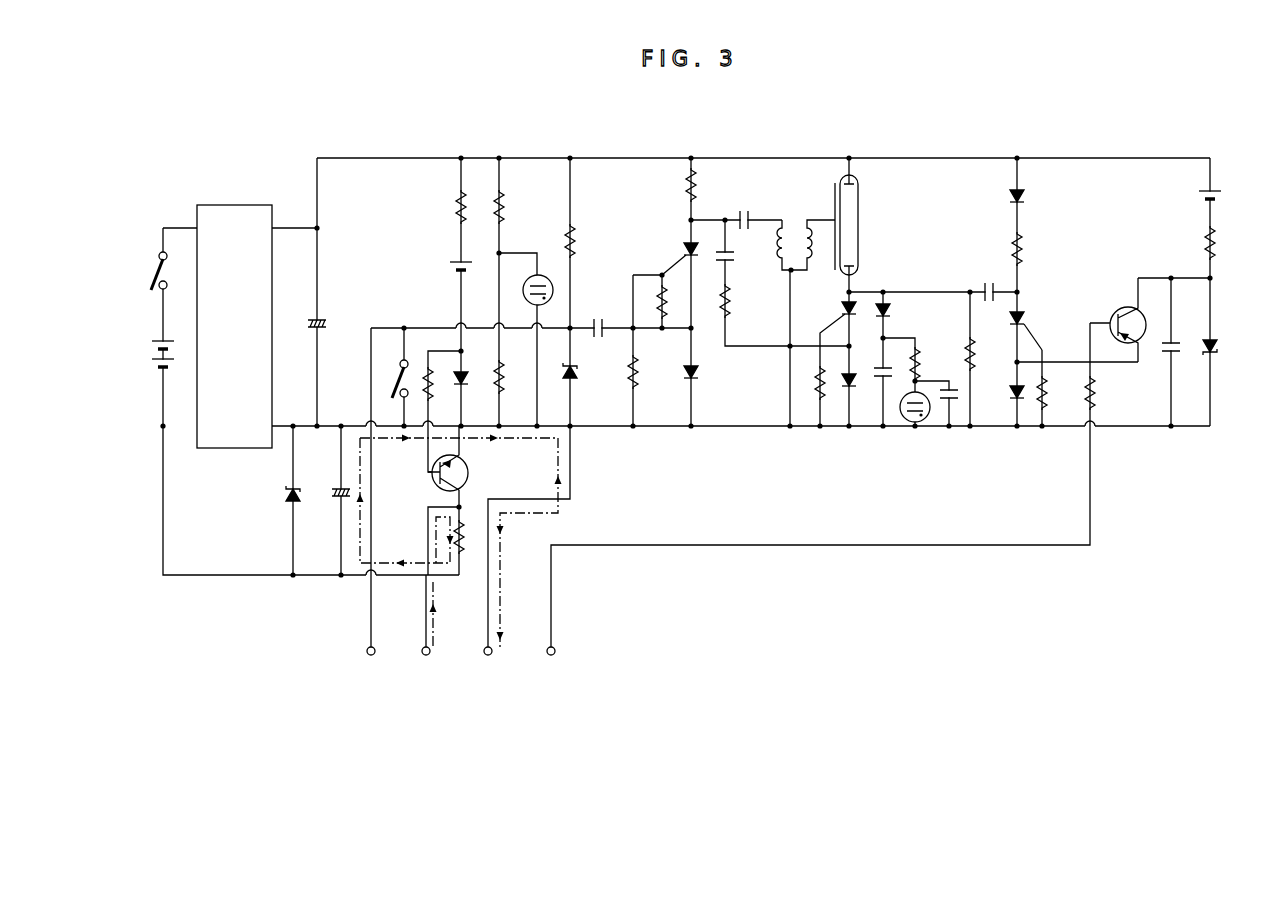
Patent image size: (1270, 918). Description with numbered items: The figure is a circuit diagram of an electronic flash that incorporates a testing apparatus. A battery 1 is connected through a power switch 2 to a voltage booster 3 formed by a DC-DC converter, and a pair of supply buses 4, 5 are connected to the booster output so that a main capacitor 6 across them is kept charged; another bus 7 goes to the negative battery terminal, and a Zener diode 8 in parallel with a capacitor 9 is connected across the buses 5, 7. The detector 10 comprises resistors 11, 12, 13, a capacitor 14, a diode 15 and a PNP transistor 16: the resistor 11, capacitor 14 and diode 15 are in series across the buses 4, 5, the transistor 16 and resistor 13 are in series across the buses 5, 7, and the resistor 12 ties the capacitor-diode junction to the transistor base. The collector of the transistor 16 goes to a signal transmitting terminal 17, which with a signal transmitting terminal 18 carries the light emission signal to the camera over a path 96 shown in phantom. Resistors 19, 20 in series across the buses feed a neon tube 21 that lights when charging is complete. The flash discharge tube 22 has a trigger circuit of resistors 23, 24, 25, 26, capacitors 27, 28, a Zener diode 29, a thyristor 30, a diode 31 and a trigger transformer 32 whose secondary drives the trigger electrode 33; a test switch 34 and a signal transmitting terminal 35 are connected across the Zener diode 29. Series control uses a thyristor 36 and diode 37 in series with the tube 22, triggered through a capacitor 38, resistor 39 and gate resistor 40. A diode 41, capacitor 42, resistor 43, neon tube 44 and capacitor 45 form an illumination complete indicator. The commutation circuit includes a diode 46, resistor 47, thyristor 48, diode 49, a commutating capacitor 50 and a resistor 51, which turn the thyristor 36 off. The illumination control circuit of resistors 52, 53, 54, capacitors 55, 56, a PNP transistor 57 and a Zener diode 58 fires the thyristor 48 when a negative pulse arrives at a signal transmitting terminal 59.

The battery 1 is at (148, 349).
The power switch 2 is at (153, 272).
The voltage booster 3 is at (240, 207).
The supply bus 4 is at (631, 157).
The supply bus 5 is at (603, 429).
The main capacitor 6 is at (307, 323).
The bus 7 is at (238, 576).
The Zener diode 8 is at (286, 493).
The capacitor 9 is at (334, 491).
The detector 10 is at (444, 320).
The resistor 11 is at (455, 208).
The resistor 12 is at (431, 386).
The resistor 13 is at (461, 545).
The capacitor 14 is at (451, 267).
The diode 15 is at (464, 374).
The PNP transistor 16 is at (468, 473).
The signal transmitting terminal 17 is at (426, 655).
The signal transmitting terminal 18 is at (488, 655).
The resistor 19 is at (505, 208).
The resistor 20 is at (502, 376).
The neon tube 21 is at (523, 285).
The flash discharge tube 22 is at (858, 206).
The resistor 23 is at (577, 239).
The resistor 24 is at (637, 373).
The resistor 25 is at (661, 287).
The resistor 26 is at (696, 193).
The capacitor 27 is at (600, 322).
The capacitor 28 is at (747, 215).
The Zener diode 29 is at (577, 376).
The thyristor 30 is at (685, 249).
The diode 31 is at (699, 381).
The trigger transformer 32 is at (796, 238).
The trigger electrode 33 is at (834, 196).
The test switch 34 is at (401, 369).
The signal transmitting terminal 35 is at (371, 655).
The thyristor 36 is at (844, 309).
The diode 37 is at (853, 380).
The capacitor 38 is at (734, 259).
The resistor 39 is at (731, 298).
The resistor 40 is at (815, 381).
The diode 41 is at (892, 313).
The capacitor 42 is at (881, 388).
The resistor 43 is at (920, 356).
The neon tube 44 is at (910, 421).
The capacitor 45 is at (960, 399).
The diode 46 is at (1026, 201).
The resistor 47 is at (1024, 250).
The thyristor 48 is at (1025, 317).
The diode 49 is at (1010, 393).
The commutating capacitor 50 is at (990, 288).
The resistor 51 is at (975, 350).
The resistor 52 is at (1046, 389).
The resistor 53 is at (1094, 389).
The resistor 54 is at (1204, 241).
The capacitor 55 is at (1167, 356).
The capacitor 56 is at (1200, 197).
The PNP transistor 57 is at (1126, 308).
The Zener diode 58 is at (1218, 348).
The signal transmitting terminal 59 is at (551, 655).
The path 96 is at (434, 582).